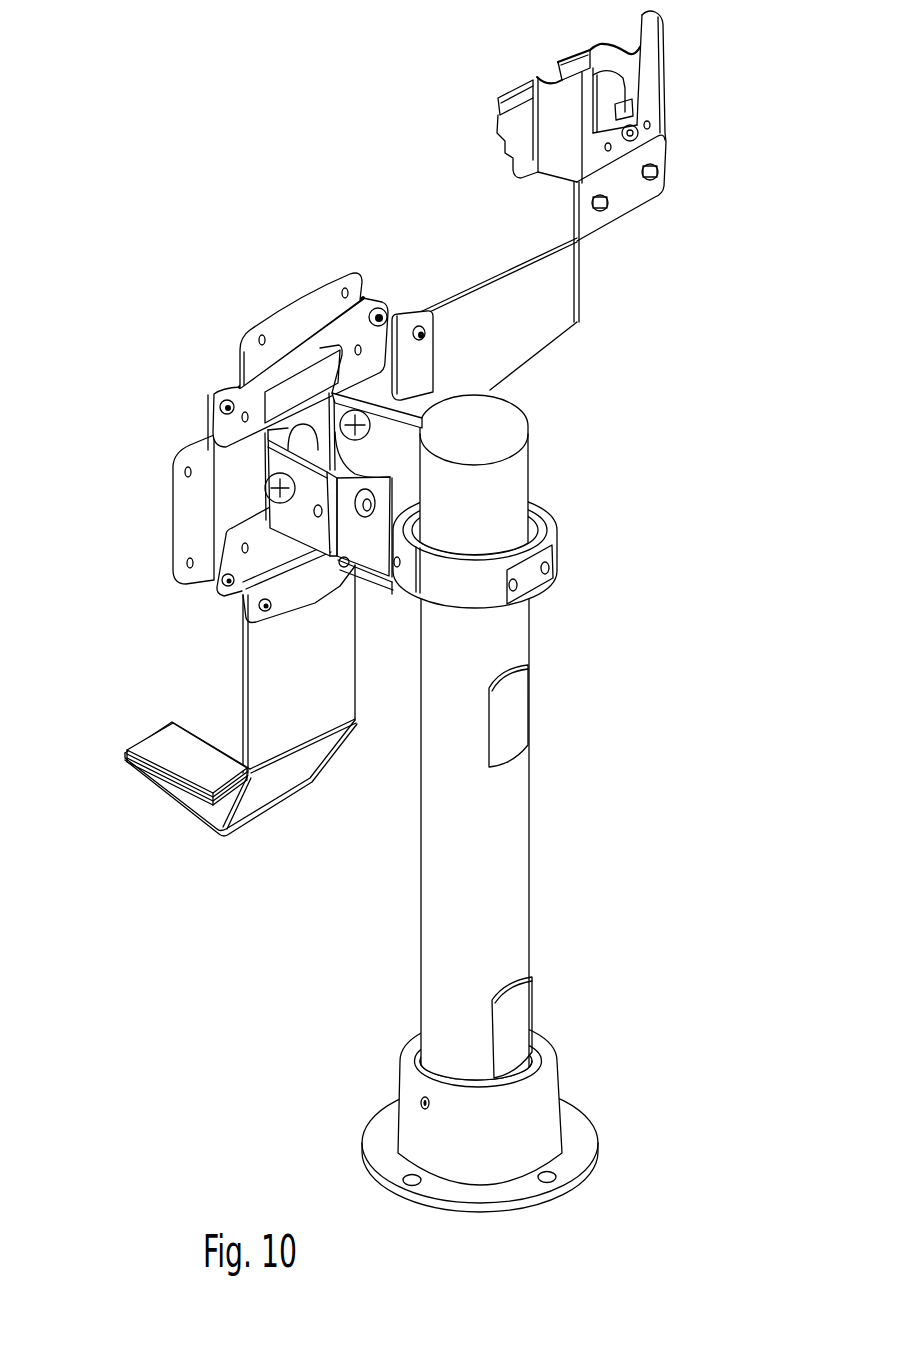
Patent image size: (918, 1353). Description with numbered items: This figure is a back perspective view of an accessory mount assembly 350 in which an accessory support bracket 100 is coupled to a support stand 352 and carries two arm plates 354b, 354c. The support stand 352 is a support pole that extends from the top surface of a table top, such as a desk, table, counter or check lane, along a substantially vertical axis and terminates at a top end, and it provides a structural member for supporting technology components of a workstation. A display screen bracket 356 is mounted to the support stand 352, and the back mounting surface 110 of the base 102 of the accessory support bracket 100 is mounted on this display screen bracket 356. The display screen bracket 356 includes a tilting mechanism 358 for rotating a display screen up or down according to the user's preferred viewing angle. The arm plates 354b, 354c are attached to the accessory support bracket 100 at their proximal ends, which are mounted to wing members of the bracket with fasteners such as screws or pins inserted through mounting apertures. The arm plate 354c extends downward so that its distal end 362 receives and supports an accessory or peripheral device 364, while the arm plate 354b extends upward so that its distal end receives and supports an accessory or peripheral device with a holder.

The accessory support bracket 100 is at (168, 418).
The base 102 is at (234, 497).
The back mounting surface 110 is at (368, 387).
The accessory mount assembly 350 is at (742, 84).
The support stand 352 is at (533, 829).
The arm plate 354b is at (553, 351).
The arm plate 354c is at (358, 644).
The display screen bracket 356 is at (561, 524).
The tilting mechanism 358 is at (409, 407).
The distal end 362 is at (129, 752).
The accessory or peripheral device 364 is at (175, 745).